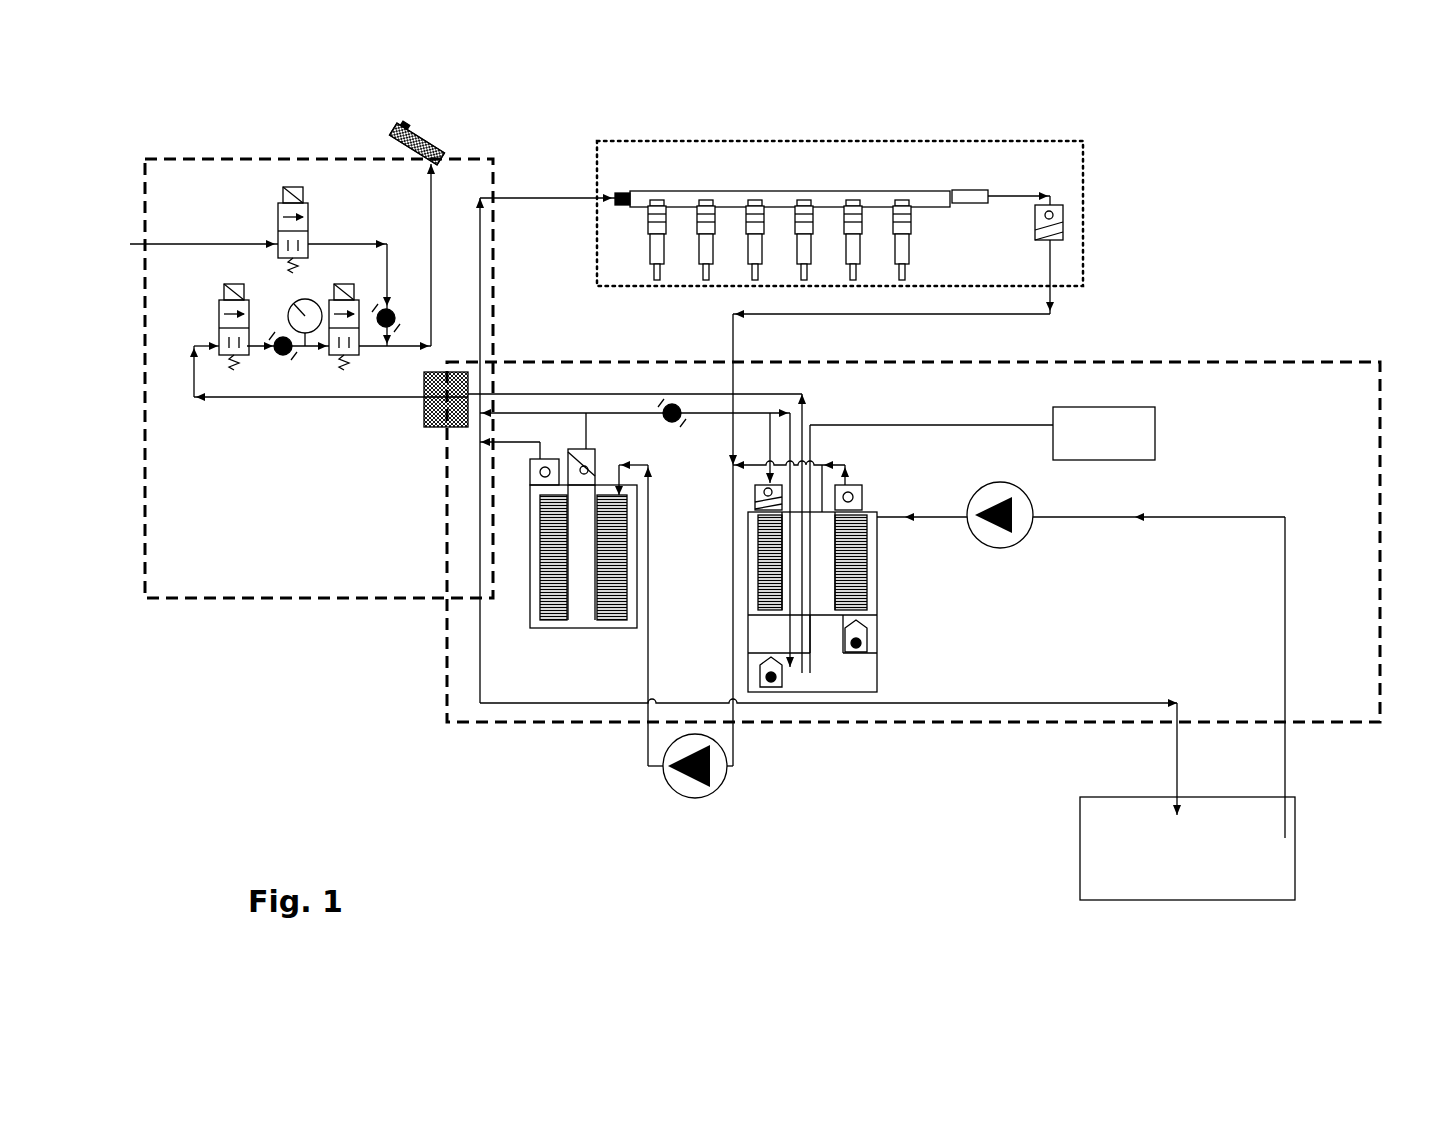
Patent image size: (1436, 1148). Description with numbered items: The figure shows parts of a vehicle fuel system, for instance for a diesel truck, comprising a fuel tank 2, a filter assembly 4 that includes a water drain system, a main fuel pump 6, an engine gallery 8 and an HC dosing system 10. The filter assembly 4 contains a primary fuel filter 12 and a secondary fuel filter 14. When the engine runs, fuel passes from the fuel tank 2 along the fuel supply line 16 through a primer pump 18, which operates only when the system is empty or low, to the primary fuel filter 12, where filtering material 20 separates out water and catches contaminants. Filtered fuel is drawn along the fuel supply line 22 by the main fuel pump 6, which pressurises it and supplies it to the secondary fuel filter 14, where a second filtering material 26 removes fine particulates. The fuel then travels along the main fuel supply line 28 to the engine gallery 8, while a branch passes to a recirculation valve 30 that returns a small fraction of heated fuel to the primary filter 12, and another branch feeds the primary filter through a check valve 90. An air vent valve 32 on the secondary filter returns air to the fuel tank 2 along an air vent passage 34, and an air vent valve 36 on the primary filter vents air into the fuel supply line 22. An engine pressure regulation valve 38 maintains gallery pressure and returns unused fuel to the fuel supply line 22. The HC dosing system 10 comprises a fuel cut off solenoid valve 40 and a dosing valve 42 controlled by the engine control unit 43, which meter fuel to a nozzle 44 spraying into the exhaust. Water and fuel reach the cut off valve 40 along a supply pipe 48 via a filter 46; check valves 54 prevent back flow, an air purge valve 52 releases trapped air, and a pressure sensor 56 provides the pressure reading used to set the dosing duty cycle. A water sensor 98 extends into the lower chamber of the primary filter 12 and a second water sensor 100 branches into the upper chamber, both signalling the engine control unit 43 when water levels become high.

The fuel tank 2 is at (1187, 848).
The filter assembly 4 is at (1337, 723).
The main fuel pump 6 is at (665, 775).
The engine gallery 8 is at (1050, 140).
The HC dosing system 10 is at (158, 157).
The primary fuel filter 12 is at (878, 597).
The secondary fuel filter 14 is at (637, 590).
The fuel supply line 16 is at (942, 513).
The primer pump 18 is at (1025, 533).
The filtering material 20 is at (850, 558).
The fuel supply line 22 is at (733, 560).
The second filtering material 26 is at (547, 613).
The main fuel supply line 28 is at (623, 414).
The recirculation valve 30 is at (755, 492).
The air vent valve 32 is at (543, 460).
The air vent passage 34 is at (607, 703).
The air vent valve 36 is at (863, 485).
The engine pressure regulation valve 38 is at (1063, 221).
The fuel cut off solenoid valve 40 is at (219, 307).
The dosing valve 42 is at (350, 290).
The engine control unit 43 is at (1157, 435).
The nozzle 44 is at (437, 143).
The filter 46 is at (422, 420).
The supply pipe 48 is at (600, 393).
The air purge valve 52 is at (308, 205).
The check valve 54 is at (393, 307).
The pressure sensor 56 is at (293, 308).
The check valve 90 is at (680, 423).
The water sensor 98 is at (813, 662).
The second water sensor 100 is at (881, 648).